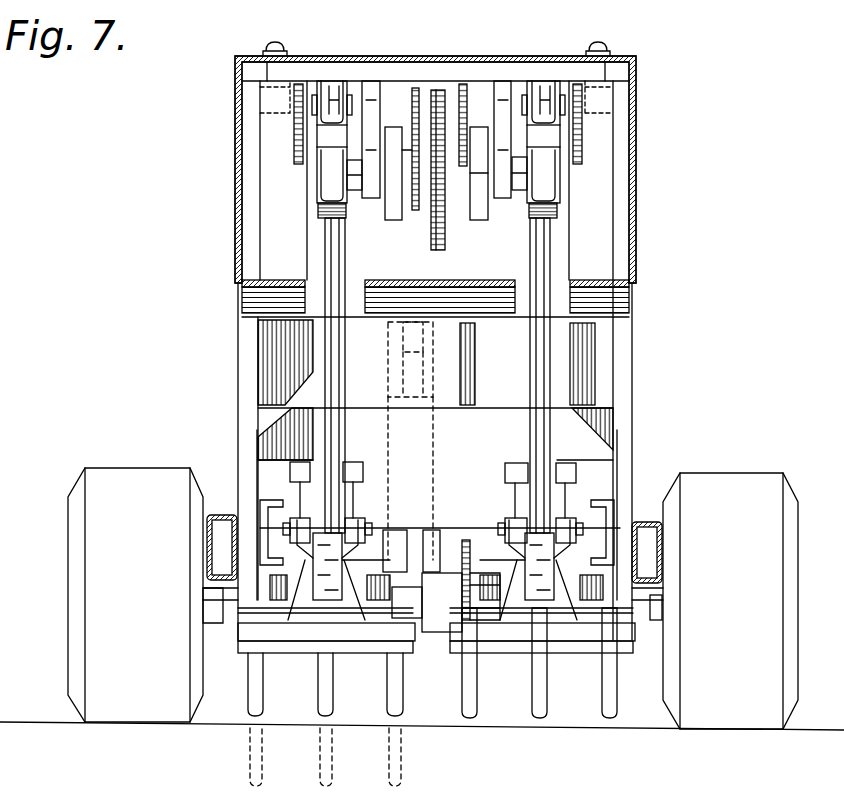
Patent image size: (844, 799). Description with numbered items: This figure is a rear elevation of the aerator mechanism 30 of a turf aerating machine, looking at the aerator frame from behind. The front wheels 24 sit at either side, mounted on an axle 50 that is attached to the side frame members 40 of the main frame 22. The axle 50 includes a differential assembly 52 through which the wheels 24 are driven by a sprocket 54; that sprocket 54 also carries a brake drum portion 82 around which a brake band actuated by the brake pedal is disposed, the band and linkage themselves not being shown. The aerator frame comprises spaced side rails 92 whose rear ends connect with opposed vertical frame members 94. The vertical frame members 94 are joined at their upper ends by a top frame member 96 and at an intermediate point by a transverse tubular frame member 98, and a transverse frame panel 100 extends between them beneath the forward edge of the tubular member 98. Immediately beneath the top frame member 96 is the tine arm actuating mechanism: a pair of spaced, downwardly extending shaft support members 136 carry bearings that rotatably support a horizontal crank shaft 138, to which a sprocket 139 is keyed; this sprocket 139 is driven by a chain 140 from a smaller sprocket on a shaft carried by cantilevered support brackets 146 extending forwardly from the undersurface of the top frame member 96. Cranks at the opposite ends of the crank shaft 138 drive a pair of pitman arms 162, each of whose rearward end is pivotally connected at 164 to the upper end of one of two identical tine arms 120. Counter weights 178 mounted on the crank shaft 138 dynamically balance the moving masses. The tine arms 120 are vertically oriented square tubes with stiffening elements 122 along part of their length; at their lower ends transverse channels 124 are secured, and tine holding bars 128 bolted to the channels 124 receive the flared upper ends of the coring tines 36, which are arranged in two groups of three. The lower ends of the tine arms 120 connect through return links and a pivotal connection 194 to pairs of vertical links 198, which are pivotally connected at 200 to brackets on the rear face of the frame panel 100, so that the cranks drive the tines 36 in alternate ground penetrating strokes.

The axle 22 is at (660, 583).
The front wheels 24 is at (95, 462).
The aerator mechanism 30 is at (637, 165).
The coring tines 36 is at (262, 702).
The side frame members 40 is at (207, 533).
The axle 50 is at (205, 617).
The differential assembly 52 is at (402, 595).
The sprocket 54 is at (460, 537).
The brake drum portion 82 is at (443, 583).
The side rails 92 is at (275, 485).
The vertical frame members 94 is at (238, 348).
The top frame member 96 is at (372, 80).
The transverse tubular frame member 98 is at (600, 362).
The transverse frame panel 100 is at (487, 427).
The tine arms 120 is at (320, 210).
The stiffening elements 122 is at (320, 262).
The transverse channels 124 is at (240, 630).
The tine holding bars 128 is at (452, 655).
The shaft support members 136 is at (498, 93).
The crank shaft 138 is at (411, 160).
The sprocket 139 is at (432, 258).
The chain 140 is at (430, 250).
The cantilevered support brackets 146 is at (292, 143).
The pitman arms 162 is at (305, 214).
The pivotal connection 164 is at (322, 178).
The counter weights 178 is at (378, 213).
The clamp 194 is at (290, 524).
The vertical links 198 is at (345, 508).
The pivotal connection 200 is at (365, 482).